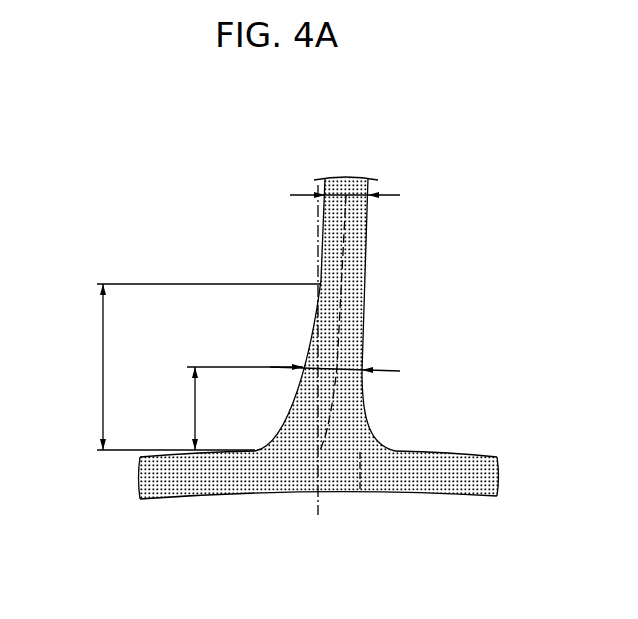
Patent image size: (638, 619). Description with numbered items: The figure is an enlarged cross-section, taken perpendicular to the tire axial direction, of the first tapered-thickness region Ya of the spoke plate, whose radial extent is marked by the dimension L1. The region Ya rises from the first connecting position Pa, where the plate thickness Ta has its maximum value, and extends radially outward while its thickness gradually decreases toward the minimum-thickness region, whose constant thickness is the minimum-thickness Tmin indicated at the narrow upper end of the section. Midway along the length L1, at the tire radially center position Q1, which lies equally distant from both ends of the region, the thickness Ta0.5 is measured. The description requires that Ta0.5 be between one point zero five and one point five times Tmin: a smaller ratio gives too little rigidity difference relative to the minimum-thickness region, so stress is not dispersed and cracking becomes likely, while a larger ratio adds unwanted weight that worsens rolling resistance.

The minimum-thickness Tmin is at (354, 197).
The first tapered-thickness region Ya is at (255, 302).
The tire radially center position Q1 is at (343, 360).
The thickness at the tire radially center position Ta0.5 is at (340, 356).
The height of the stem from the flange top L1 is at (190, 367).
The first connecting position Pa is at (362, 497).